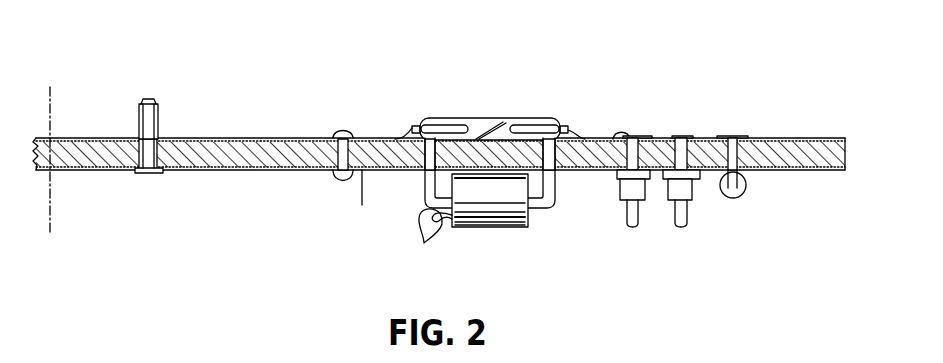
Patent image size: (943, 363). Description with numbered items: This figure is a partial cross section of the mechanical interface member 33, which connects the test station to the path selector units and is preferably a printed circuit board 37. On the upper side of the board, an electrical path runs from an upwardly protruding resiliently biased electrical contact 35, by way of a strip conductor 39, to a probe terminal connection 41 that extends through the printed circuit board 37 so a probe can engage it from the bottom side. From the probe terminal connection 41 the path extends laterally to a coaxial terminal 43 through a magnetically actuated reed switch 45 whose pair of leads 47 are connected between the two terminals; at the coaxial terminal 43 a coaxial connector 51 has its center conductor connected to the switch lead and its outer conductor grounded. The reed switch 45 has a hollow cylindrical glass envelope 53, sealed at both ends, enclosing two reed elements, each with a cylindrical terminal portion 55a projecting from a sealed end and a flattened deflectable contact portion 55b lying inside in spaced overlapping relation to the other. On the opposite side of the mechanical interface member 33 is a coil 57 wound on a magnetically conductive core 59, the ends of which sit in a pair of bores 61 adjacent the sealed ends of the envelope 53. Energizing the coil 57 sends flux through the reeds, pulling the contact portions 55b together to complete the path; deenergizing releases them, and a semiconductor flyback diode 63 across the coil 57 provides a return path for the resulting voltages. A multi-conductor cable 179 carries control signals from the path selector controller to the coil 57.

The mechanical interface member 33 is at (230, 173).
The resiliently biased electrical contact 35 is at (158, 120).
The printed circuit board 37 is at (193, 171).
The strip conductor 39 is at (238, 138).
The probe terminal connection 41 is at (343, 129).
The coaxial terminal 43 is at (638, 138).
The reed switch 45 is at (490, 101).
The leads 47 is at (402, 132).
The coaxial connector 51 is at (700, 190).
The glass envelope 53 is at (490, 161).
The cylindrical terminal portion 55a is at (446, 125).
The flattened deflectable contact portion 55b is at (488, 125).
The coil 57 is at (481, 228).
The magnetically conductive core 59 is at (549, 209).
The bores 61 is at (425, 184).
The semiconductor flyback diode 63 is at (746, 187).
The multi-conductor cable 179 is at (429, 231).